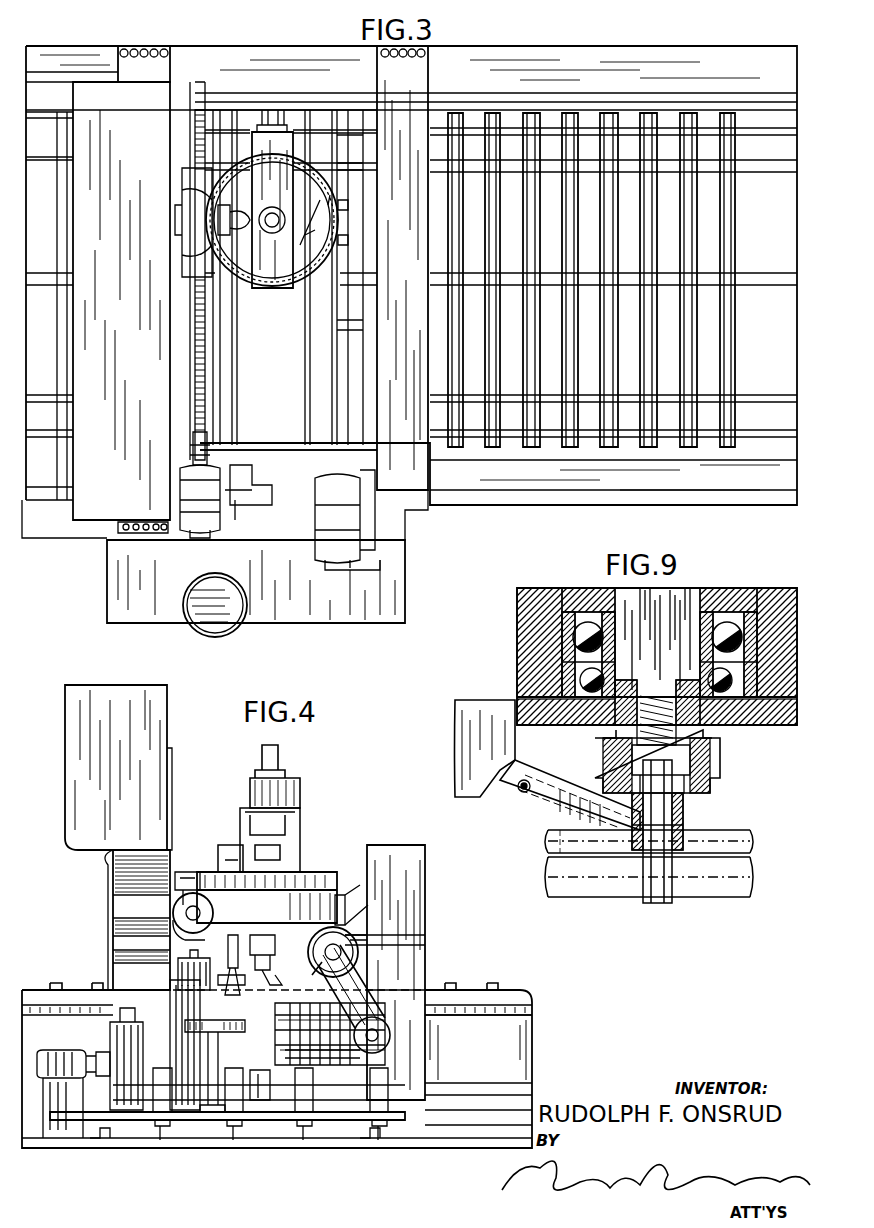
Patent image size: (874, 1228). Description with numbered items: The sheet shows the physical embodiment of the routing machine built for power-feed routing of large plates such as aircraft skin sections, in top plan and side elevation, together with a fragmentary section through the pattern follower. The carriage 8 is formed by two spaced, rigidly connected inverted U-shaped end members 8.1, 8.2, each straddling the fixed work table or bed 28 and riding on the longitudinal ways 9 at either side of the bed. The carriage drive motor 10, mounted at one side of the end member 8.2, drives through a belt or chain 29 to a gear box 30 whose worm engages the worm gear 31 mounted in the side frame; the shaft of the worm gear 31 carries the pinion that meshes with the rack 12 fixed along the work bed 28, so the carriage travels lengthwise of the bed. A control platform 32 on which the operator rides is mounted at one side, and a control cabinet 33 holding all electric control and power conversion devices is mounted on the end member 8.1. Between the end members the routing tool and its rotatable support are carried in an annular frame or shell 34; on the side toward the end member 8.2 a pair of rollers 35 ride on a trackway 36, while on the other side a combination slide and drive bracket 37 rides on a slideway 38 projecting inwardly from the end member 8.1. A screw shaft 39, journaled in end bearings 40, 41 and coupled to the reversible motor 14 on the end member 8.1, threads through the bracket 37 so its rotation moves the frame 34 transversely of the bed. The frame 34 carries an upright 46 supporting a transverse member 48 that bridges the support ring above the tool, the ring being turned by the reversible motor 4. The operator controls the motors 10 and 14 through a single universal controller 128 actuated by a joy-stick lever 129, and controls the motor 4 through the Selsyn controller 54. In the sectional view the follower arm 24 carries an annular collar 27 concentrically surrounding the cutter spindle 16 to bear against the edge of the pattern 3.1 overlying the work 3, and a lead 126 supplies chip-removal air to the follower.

In FIG. 9, the work 3 is at (735, 878).
In FIG. 9, the pattern 3.1 is at (732, 840).
In FIG. 4, the reversible motor 4 is at (262, 822).
In FIG. 4, the carriage 8 is at (234, 1013).
In FIG. 3, the carriage end member 8.1 is at (125, 72).
In FIG. 4, the carriage end member 8.1 is at (125, 898).
In FIG. 3, the carriage end member 8.2 is at (408, 334).
In FIG. 4, the carriage end member 8.2 is at (418, 910).
In FIG. 3, the ways 9 is at (523, 60).
In FIG. 4, the ways 9 is at (522, 990).
In FIG. 3, the carriage drive motor 10 is at (350, 527).
In FIG. 4, the carriage drive motor 10 is at (345, 932).
In FIG. 4, the rack 12 is at (508, 1020).
In FIG. 3, the reversible motor 14 is at (193, 512).
In FIG. 4, the reversible motor 14 is at (180, 922).
In FIG. 9, the cutter spindle 16 is at (708, 760).
In FIG. 9, the follower arm 24 is at (556, 810).
In FIG. 9, the annular collar 27 is at (668, 848).
In FIG. 3, the work table or bed 28 is at (575, 135).
In FIG. 4, the work table or bed 28 is at (490, 985).
In FIG. 4, the belt or chain 29 is at (378, 1005).
In FIG. 4, the gear box 30 is at (390, 1050).
In FIG. 4, the worm gear 31 is at (332, 1062).
In FIG. 3, the control platform 32 is at (288, 608).
In FIG. 4, the control platform 32 is at (265, 1120).
In FIG. 3, the control cabinet 33 is at (110, 432).
In FIG. 4, the control cabinet 33 is at (80, 792).
In FIG. 3, the annular frame or shell 34 is at (305, 278).
In FIG. 4, the annular frame or shell 34 is at (276, 911).
In FIG. 3, the rollers 35 is at (350, 205).
In FIG. 4, the rollers 35 is at (338, 895).
In FIG. 3, the trackway 36 is at (345, 288).
In FIG. 4, the trackway 36 is at (347, 900).
In FIG. 3, the combination slide and drive bracket 37 is at (193, 250).
In FIG. 4, the combination slide and drive bracket 37 is at (176, 890).
In FIG. 3, the slideway 38 is at (192, 316).
In FIG. 3, the screw shaft 39 is at (195, 356).
In FIG. 3, the end bearing 40 is at (203, 100).
In FIG. 3, the end bearing 41 is at (205, 438).
In FIG. 3, the upright 46 is at (272, 124).
In FIG. 3, the transverse member 48 is at (268, 284).
In FIG. 4, the transverse member 48 is at (290, 768).
In FIG. 4, the drum-type controller 54 is at (180, 965).
In FIG. 9, the lead 126 is at (518, 792).
In FIG. 3, the universal controller 128 is at (252, 495).
In FIG. 4, the universal controller 128 is at (248, 1000).
In FIG. 4, the lever 129 is at (240, 975).